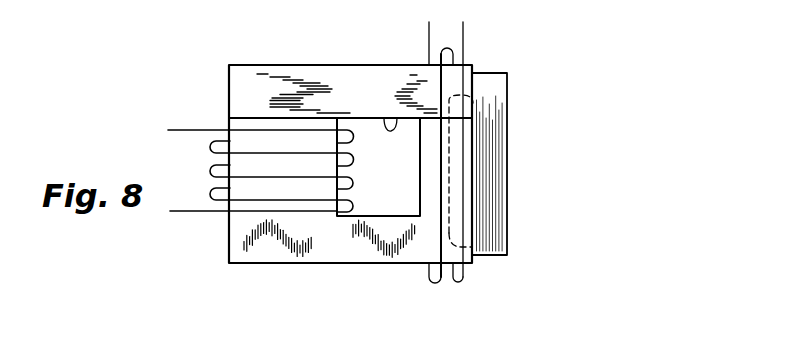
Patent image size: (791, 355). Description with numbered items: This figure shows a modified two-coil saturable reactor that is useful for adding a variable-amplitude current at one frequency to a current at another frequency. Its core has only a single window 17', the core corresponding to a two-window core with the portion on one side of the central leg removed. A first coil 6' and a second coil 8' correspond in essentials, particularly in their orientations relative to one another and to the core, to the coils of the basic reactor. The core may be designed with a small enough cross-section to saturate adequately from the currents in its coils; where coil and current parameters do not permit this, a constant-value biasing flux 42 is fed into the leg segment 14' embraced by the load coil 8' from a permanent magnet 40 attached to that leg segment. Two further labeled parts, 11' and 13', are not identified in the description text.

The housing 11' is at (321, 164).
The first coil 6' is at (258, 171).
The core 13' is at (327, 187).
The single window 17' is at (378, 122).
The leg segment 14' is at (494, 165).
The second coil 8' is at (418, 163).
The permanent magnet 40 is at (493, 83).
The biasing flux 42 is at (477, 138).